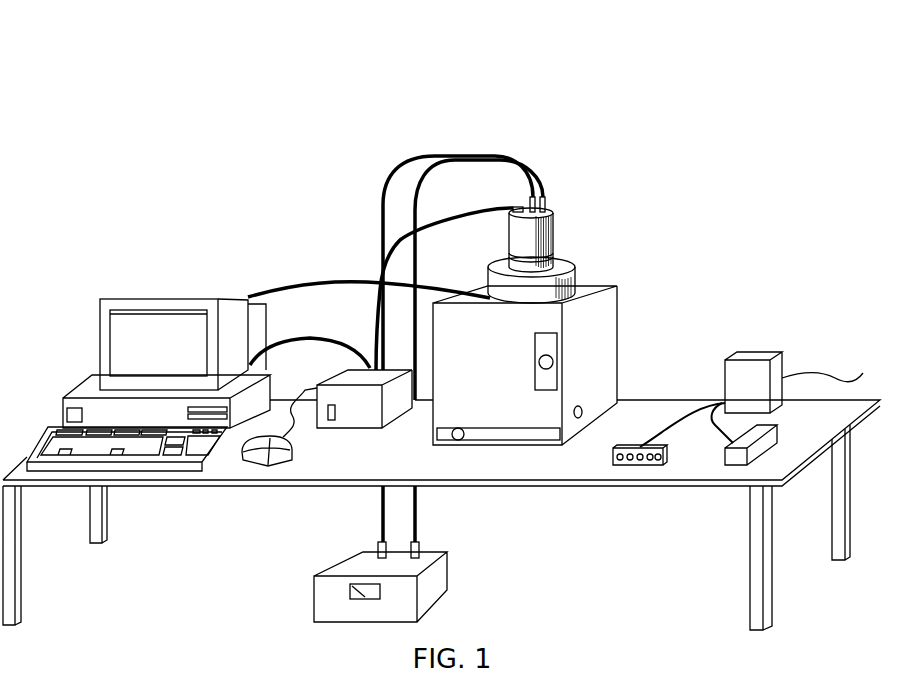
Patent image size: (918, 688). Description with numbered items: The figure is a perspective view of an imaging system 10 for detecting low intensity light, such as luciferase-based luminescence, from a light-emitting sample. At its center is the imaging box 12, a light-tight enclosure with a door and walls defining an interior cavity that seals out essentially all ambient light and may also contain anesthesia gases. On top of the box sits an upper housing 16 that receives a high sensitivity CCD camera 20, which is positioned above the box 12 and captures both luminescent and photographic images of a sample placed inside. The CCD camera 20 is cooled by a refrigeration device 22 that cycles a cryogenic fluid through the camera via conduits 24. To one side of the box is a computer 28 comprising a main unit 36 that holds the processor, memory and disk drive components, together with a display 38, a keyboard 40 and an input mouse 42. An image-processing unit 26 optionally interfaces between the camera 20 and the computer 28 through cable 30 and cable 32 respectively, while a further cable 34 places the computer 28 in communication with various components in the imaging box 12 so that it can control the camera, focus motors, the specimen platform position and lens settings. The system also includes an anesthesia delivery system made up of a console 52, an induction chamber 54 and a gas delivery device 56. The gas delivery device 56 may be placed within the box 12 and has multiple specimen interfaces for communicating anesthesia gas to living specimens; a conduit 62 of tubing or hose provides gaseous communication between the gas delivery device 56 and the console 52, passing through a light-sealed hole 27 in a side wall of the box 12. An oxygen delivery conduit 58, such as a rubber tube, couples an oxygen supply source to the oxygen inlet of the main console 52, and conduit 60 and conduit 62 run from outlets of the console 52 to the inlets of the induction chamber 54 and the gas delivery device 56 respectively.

The imaging system 10 is at (168, 143).
The imaging box 12 is at (648, 273).
The upper housing 16 is at (563, 265).
The CCD camera 20 is at (550, 228).
The refrigeration device 22 is at (358, 560).
The conduits 24 is at (418, 172).
The image-processing unit 26 is at (398, 403).
The light-sealed hole 27 is at (582, 407).
The computer 28 is at (110, 288).
The cable 30 is at (472, 205).
The cable 32 is at (312, 340).
The cable 34 is at (340, 278).
The main unit 36 is at (93, 392).
The display 38 is at (100, 318).
The keyboard 40 is at (95, 447).
The input mouse 42 is at (238, 447).
The console 52 is at (757, 352).
The induction chamber 54 is at (767, 440).
The gas delivery device 56 is at (615, 457).
The oxygen delivery conduit 58 is at (828, 380).
The conduit 60 is at (708, 423).
The conduit 62 is at (668, 428).